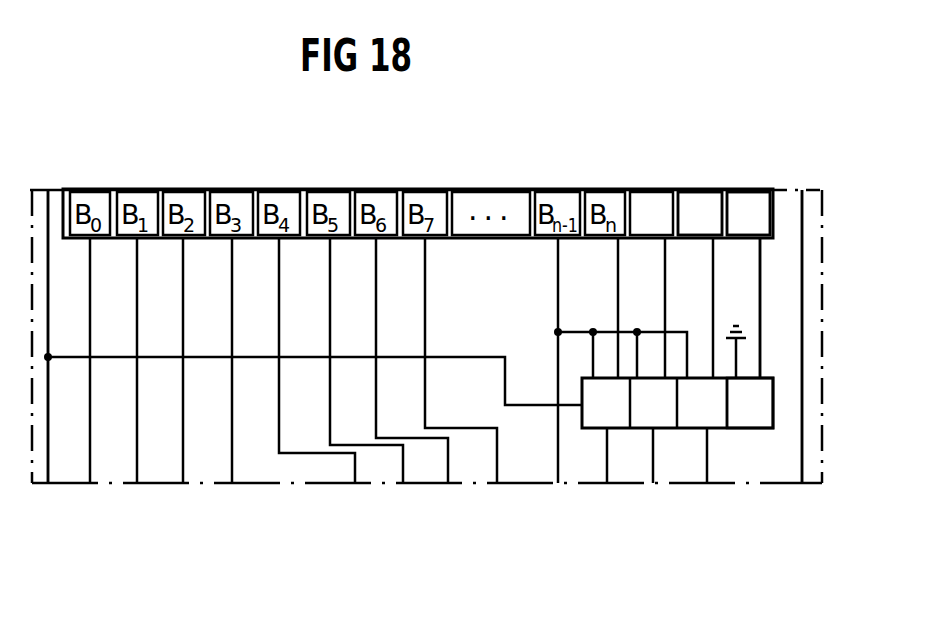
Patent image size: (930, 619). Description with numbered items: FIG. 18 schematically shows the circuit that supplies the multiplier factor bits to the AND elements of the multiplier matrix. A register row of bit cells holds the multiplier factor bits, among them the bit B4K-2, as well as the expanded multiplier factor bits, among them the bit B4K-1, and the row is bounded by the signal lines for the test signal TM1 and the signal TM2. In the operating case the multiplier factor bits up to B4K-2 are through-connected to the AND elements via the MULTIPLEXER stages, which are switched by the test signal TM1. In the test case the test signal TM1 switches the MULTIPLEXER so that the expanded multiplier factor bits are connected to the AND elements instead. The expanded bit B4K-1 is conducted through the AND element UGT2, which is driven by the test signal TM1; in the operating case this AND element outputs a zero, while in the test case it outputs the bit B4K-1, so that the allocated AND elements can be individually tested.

The test signal TM1 is at (59, 315).
The second time mark line TM2 is at (798, 314).
The multiplier factor bit B4K-2 is at (697, 210).
The expanded multiplier factor bit B4K-1 is at (742, 200).
The multiplexer MULTIPLEXER is at (690, 428).
The AND element AND is at (747, 428).
The AND element UGT2 is at (759, 414).